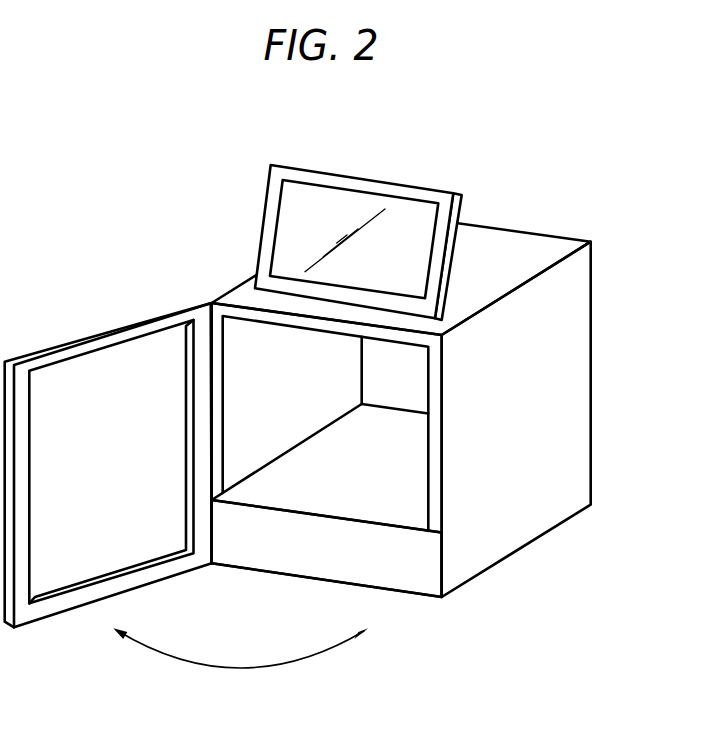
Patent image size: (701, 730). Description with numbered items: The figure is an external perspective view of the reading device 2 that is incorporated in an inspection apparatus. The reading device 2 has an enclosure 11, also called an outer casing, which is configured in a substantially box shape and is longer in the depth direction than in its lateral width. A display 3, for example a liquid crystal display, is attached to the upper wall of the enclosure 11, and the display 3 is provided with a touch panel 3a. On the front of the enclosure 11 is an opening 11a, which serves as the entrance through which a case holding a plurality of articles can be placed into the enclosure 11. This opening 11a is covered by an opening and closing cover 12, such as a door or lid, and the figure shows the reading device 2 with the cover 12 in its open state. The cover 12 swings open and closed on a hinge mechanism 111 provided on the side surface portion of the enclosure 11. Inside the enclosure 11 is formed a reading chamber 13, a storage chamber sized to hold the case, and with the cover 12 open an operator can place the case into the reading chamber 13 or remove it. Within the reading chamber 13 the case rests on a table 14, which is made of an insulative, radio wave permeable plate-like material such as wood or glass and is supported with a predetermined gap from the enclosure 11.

The reading device 2 is at (392, 416).
The display 3 is at (358, 208).
The touch panel 3a is at (360, 203).
The enclosure 11 is at (392, 428).
The opening 11a is at (242, 334).
The hinge mechanism 111 is at (209, 303).
The opening and closing cover 12 is at (53, 617).
The reading chamber 13 is at (413, 380).
The table 14 is at (398, 507).